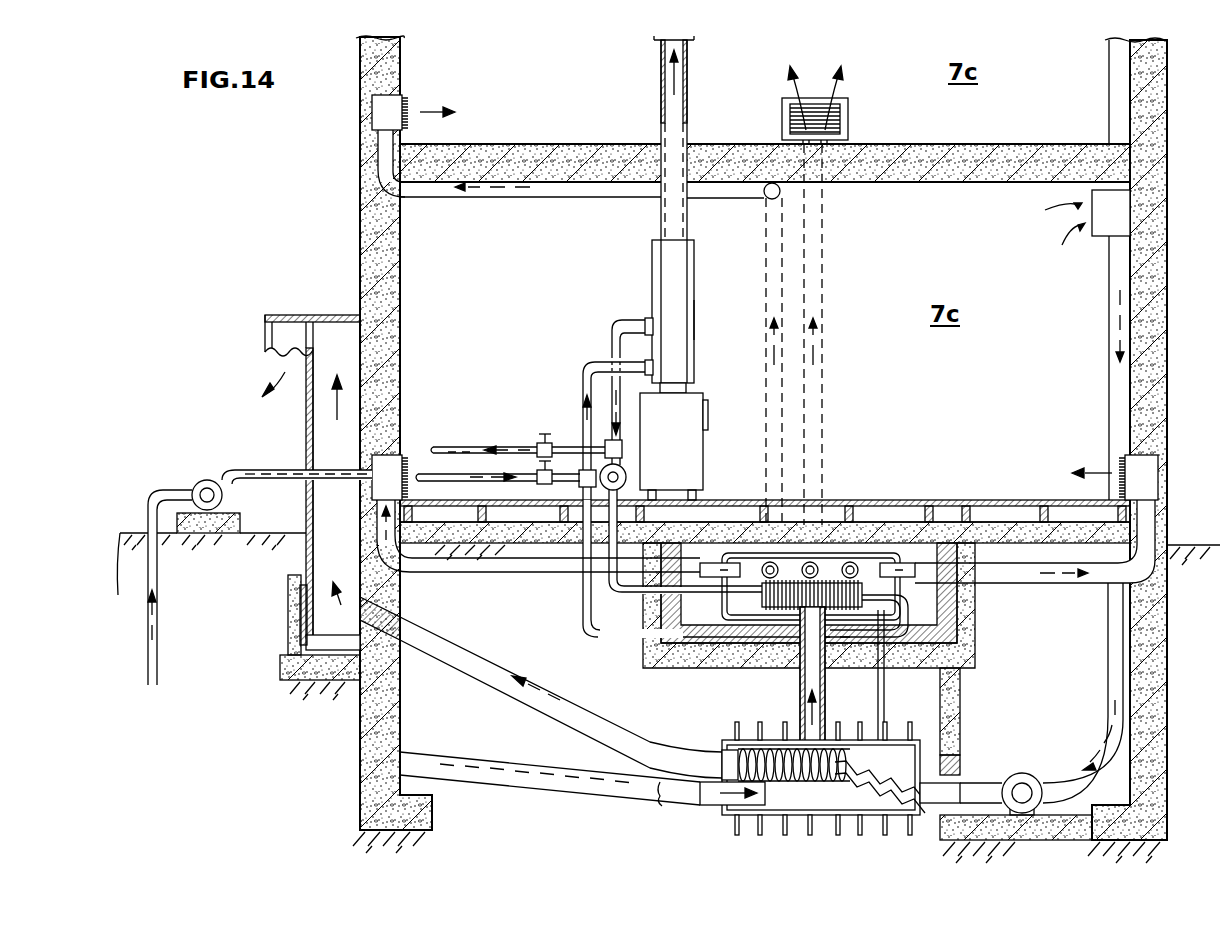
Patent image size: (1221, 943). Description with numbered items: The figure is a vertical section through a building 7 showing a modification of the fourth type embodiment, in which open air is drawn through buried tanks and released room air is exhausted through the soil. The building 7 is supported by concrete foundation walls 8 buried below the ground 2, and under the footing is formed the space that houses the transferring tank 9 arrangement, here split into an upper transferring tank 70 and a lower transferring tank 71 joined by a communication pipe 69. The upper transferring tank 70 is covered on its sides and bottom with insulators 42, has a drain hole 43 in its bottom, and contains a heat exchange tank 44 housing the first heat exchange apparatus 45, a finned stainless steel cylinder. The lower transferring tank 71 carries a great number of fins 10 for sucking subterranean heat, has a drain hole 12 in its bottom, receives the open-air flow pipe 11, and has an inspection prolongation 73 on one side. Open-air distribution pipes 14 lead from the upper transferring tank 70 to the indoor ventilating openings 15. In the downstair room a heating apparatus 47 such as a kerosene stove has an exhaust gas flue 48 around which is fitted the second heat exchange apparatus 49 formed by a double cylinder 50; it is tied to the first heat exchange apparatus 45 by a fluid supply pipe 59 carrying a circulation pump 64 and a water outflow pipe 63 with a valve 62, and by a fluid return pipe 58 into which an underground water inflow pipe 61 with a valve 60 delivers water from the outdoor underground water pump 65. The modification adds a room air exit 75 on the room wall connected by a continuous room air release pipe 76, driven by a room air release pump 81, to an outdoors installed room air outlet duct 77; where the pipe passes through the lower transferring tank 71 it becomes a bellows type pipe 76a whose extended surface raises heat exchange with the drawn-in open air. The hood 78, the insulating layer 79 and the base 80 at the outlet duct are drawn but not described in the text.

The ground 2 is at (138, 533).
The building 7 is at (362, 221).
The concrete foundation wall 8 is at (1142, 738).
The transferring tank 9 is at (710, 740).
The fins 10 is at (752, 836).
The open-air flow pipe 11 is at (652, 790).
The drain hole 12 is at (896, 815).
The open-air distribution pipe 14 is at (525, 195).
The indoor ventilating opening 15 is at (398, 108).
The insulator 42 is at (972, 600).
The drain hole 43 is at (878, 668).
The heat exchange tank 44 is at (731, 552).
The first heat exchange apparatus 45 is at (823, 588).
The heating apparatus 47 is at (705, 422).
The exhaust gas flue 48 is at (661, 210).
The second heat exchange apparatus 49 is at (697, 330).
The double cylinder 50 is at (694, 271).
The fluid return pipe 58 is at (586, 364).
The fluid supply pipe 59 is at (620, 328).
The valve 60 is at (535, 476).
The underground water inflow pipe 61 is at (494, 460).
The valve 62 is at (544, 434).
The water outflow pipe 63 is at (586, 400).
The circulation pump 64 is at (628, 480).
The underground water pump 65 is at (206, 482).
The communication pipe 69 is at (798, 694).
The upper transferring tank 70 is at (958, 664).
The lower transferring tank 71 is at (824, 815).
The inspection prolongation 73 is at (947, 770).
The room air exit 75 is at (1099, 236).
The room air release pipe 76 is at (1108, 435).
The bellows type pipe 76a is at (854, 802).
The room air outlet duct 77 is at (304, 420).
The hood 78 is at (310, 314).
The insulation 79 is at (288, 618).
The base 80 is at (338, 682).
The room air release pump 81 is at (1022, 776).